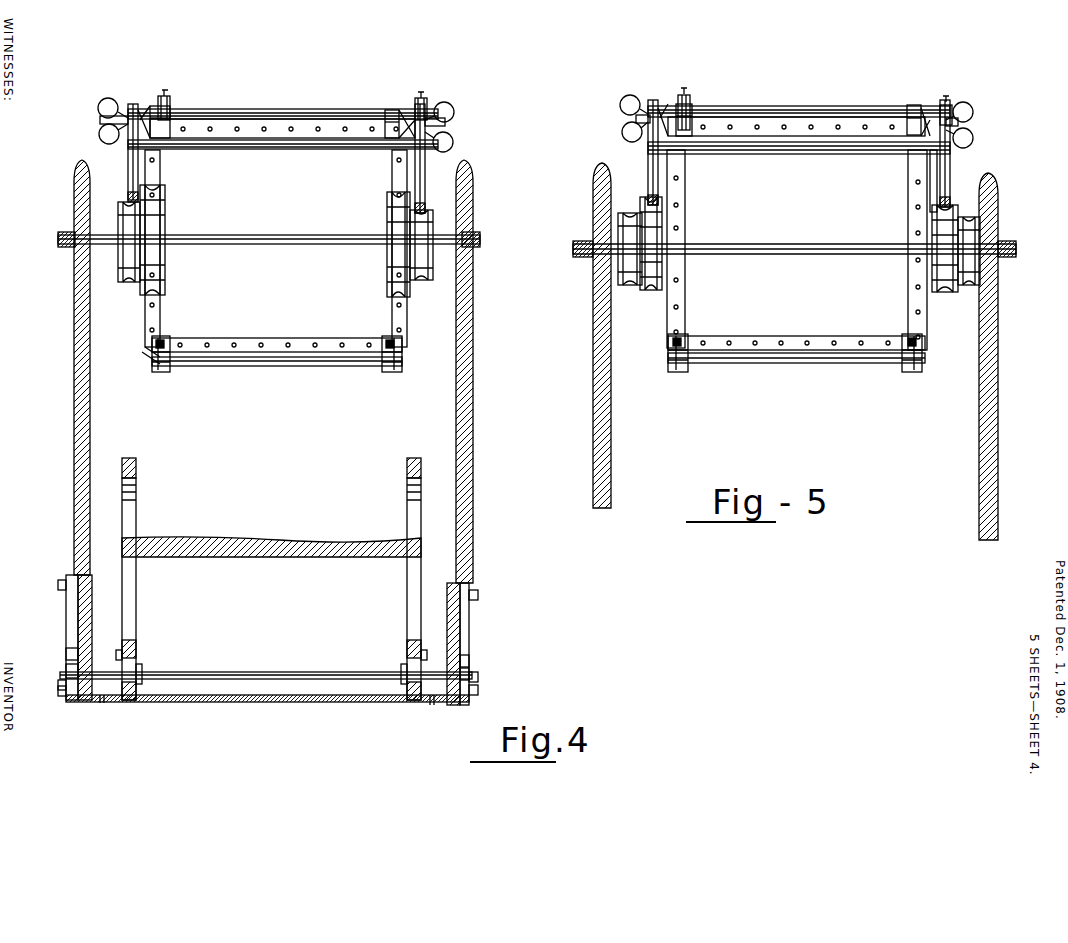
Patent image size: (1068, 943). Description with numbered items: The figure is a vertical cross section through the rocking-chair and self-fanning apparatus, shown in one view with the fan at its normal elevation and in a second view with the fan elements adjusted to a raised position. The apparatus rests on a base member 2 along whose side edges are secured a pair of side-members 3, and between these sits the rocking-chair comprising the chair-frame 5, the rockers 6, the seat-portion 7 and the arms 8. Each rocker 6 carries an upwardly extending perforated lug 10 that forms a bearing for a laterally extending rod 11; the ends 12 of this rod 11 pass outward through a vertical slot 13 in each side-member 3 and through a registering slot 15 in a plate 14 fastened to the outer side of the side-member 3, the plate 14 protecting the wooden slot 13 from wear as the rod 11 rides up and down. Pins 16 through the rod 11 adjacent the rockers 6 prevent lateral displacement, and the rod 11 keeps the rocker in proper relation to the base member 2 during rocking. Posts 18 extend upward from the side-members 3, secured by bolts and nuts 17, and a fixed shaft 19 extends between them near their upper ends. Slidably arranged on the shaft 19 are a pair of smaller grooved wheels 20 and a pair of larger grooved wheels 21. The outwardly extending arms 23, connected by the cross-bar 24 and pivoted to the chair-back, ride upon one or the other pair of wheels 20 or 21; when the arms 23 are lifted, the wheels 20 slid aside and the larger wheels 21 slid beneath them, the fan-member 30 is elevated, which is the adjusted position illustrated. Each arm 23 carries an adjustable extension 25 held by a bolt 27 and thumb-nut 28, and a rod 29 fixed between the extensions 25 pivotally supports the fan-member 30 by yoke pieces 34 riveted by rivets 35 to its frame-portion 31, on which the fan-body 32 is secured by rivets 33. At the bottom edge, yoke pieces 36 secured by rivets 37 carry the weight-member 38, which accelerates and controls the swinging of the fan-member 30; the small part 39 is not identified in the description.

In FIG. 4, the base member 2 is at (130, 702).
In FIG. 4, the side-member 3 is at (78, 612).
In FIG. 4, the chair-frame 5 is at (136, 603).
In FIG. 4, the rocker 6 is at (102, 703).
In FIG. 4, the seat-portion 7 is at (210, 538).
In FIG. 4, the arm 8 is at (136, 472).
In FIG. 4, the perforated lug 10 is at (136, 660).
In FIG. 4, the rod 11 is at (258, 672).
In FIG. 4, the end of rod 12 is at (66, 670).
In FIG. 4, the vertical slot 13 is at (122, 655).
In FIG. 4, the plate 14 is at (66, 652).
In FIG. 4, the vertical slot 15 is at (58, 690).
In FIG. 4, the pin 16 is at (142, 670).
In FIG. 4, the bolts and nuts 17 is at (58, 585).
In FIG. 4, the post 18 is at (74, 367).
In FIG. 5, the post 18 is at (593, 303).
In FIG. 4, the shaft 19 is at (228, 244).
In FIG. 5, the shaft 19 is at (580, 246).
In FIG. 4, the grooved wheel 20 is at (124, 282).
In FIG. 5, the grooved wheel 20 is at (630, 285).
In FIG. 4, the grooved wheel 21 is at (165, 282).
In FIG. 5, the grooved wheel 21 is at (662, 224).
In FIG. 4, the outwardly extending arm 23 is at (128, 172).
In FIG. 5, the outwardly extending arm 23 is at (653, 100).
In FIG. 4, the cross-bar 24 is at (268, 150).
In FIG. 5, the cross-bar 24 is at (840, 154).
In FIG. 4, the adjustable extension 25 is at (118, 116).
In FIG. 5, the adjustable extension 25 is at (645, 115).
In FIG. 4, the bolt 27 is at (160, 105).
In FIG. 5, the bolt 27 is at (690, 104).
In FIG. 4, the thumb-nut 28 is at (98, 126).
In FIG. 5, the thumb-nut 28 is at (622, 110).
In FIG. 4, the rod 29 is at (240, 120).
In FIG. 5, the rod 29 is at (792, 117).
In FIG. 4, the fan-member 30 is at (145, 347).
In FIG. 4, the frame-portion 31 is at (252, 130).
In FIG. 5, the frame-portion 31 is at (872, 125).
In FIG. 4, the fan-body 32 is at (288, 140).
In FIG. 5, the fan-body 32 is at (772, 338).
In FIG. 4, the rivet 33 is at (340, 129).
In FIG. 5, the rivet 33 is at (766, 131).
In FIG. 4, the yoke piece 34 is at (170, 116).
In FIG. 5, the yoke piece 34 is at (692, 118).
In FIG. 4, the rivet 35 is at (160, 126).
In FIG. 5, the rivet 35 is at (685, 134).
In FIG. 4, the yoke piece 36 is at (152, 368).
In FIG. 5, the yoke piece 36 is at (676, 372).
In FIG. 4, the rivet 37 is at (164, 345).
In FIG. 5, the rivet 37 is at (681, 340).
In FIG. 4, the weight-member 38 is at (192, 366).
In FIG. 5, the weight-member 38 is at (822, 363).
In FIG. 4, the pin 39 is at (165, 92).
In FIG. 5, the pin 39 is at (688, 96).